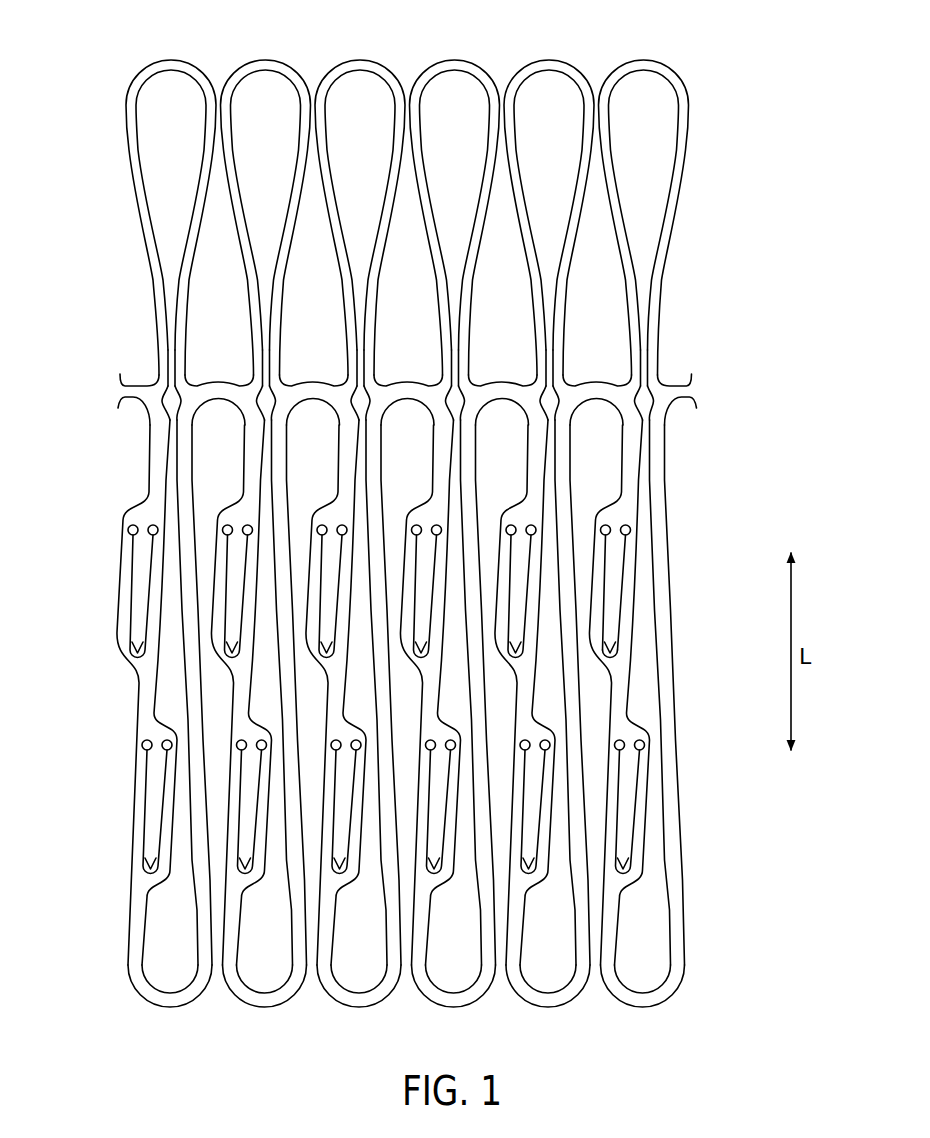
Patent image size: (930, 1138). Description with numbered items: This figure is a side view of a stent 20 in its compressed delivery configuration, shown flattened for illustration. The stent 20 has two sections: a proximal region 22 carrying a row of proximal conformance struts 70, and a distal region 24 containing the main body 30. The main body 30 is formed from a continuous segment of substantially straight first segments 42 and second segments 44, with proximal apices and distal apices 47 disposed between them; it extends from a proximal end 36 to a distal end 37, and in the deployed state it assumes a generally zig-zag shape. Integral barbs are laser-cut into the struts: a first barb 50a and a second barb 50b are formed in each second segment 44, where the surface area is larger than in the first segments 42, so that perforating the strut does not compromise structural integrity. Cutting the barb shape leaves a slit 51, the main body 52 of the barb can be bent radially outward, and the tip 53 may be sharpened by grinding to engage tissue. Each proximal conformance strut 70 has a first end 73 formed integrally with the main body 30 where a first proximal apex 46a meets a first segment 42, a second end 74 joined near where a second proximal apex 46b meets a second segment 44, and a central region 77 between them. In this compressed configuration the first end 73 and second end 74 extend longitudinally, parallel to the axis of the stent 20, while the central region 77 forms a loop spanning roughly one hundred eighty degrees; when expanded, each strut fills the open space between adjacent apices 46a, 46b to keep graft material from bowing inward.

The stent 20 is at (132, 44).
The proximal region 22 is at (115, 266).
The distal region 24 is at (113, 694).
The main body 30 is at (135, 740).
The proximal end 36 is at (714, 386).
The distal end 37 is at (713, 1014).
The first segments 42 is at (677, 932).
The second segments 44 is at (623, 693).
The first proximal apex 46a is at (135, 393).
The second proximal apex 46b is at (597, 388).
The distal apices 47 is at (165, 1002).
The first barb 50a is at (618, 629).
The second barb 50b is at (632, 810).
The slit 51 is at (618, 655).
The main body of the barb 52 is at (613, 592).
The tip of the barb 53 is at (629, 866).
The proximal conformance struts 70 is at (292, 62).
The first end 73 is at (648, 372).
The second end 74 is at (632, 378).
The central region 77 is at (641, 60).